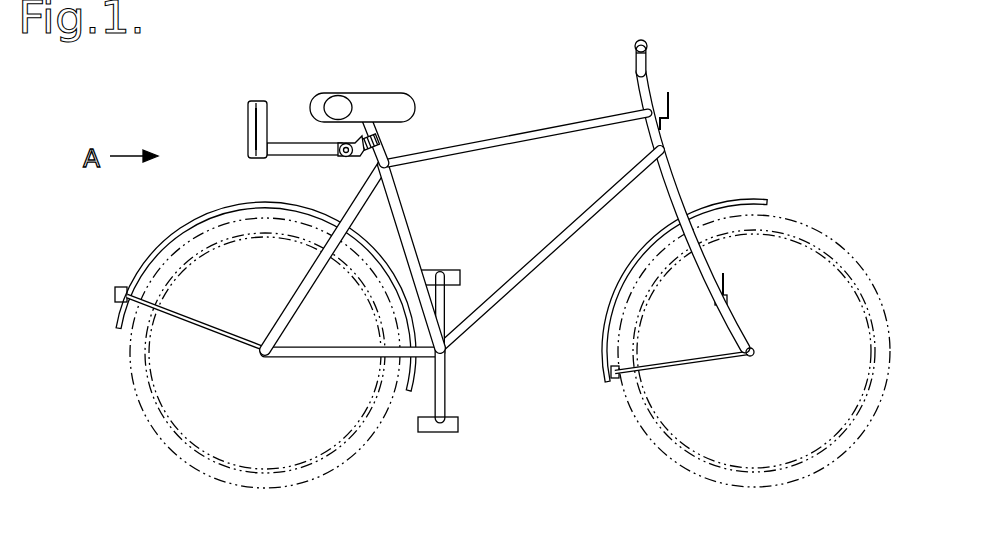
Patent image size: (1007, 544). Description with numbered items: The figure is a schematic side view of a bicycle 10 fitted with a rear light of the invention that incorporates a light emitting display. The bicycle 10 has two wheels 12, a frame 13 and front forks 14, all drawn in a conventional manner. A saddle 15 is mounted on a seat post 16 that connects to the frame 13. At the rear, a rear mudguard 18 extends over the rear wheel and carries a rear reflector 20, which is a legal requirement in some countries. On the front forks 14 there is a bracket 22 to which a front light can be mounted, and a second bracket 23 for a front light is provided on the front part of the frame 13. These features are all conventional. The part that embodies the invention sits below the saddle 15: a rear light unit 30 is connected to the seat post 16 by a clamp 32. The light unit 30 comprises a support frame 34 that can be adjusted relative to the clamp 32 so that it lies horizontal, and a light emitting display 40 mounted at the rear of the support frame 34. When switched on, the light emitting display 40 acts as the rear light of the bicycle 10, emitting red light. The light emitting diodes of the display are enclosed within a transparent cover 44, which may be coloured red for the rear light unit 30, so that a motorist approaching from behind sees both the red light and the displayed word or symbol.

The bicycle 10 is at (718, 98).
The wheels 12 is at (147, 418).
The frame 13 is at (547, 130).
The front forks 14 is at (688, 207).
The saddle 15 is at (371, 103).
The seat post 16 is at (389, 166).
The rear mudguard 18 is at (158, 250).
The rear reflector 20 is at (115, 298).
The bracket 22 is at (728, 296).
The second bracket 23 is at (671, 100).
The rear light unit 30 is at (290, 112).
The clamp 32 is at (382, 142).
The support frame 34 is at (297, 150).
The light emitting display 40 is at (249, 107).
The transparent cover 44 is at (248, 128).